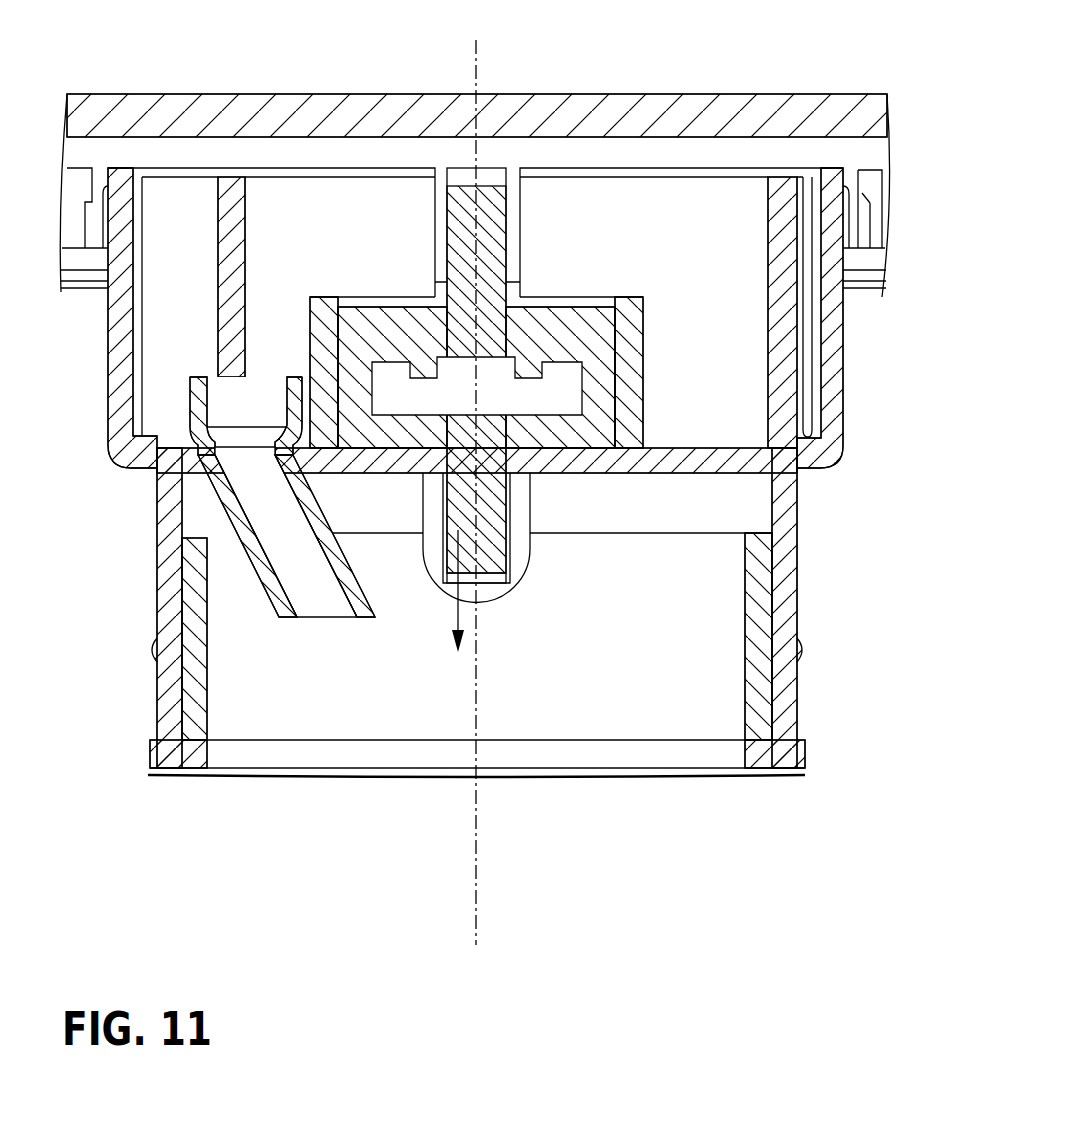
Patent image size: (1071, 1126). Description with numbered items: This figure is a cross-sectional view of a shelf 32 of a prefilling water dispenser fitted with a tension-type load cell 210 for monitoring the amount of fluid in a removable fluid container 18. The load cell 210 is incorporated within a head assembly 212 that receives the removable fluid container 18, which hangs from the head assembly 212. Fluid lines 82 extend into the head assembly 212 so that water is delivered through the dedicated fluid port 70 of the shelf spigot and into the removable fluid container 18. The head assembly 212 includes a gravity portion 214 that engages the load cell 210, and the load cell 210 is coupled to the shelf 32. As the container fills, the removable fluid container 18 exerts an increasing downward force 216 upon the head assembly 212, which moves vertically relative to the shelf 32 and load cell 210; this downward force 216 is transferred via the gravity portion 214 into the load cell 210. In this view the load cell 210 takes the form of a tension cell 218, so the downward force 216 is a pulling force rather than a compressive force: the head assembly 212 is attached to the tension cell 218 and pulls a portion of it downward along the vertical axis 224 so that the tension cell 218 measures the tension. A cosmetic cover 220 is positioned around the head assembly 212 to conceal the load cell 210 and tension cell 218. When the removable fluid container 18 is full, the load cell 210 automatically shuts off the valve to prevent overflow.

The shelf 32 is at (760, 95).
The load cell 210 is at (588, 270).
The head assembly 212 is at (783, 557).
The gravity portion 214 is at (518, 545).
The downward force 216 is at (457, 610).
The tension cell 218 is at (575, 347).
The cosmetic cover 220 is at (833, 376).
The vertical axis 224 is at (476, 805).
The dedicated fluid port 70 is at (287, 550).
The fluid lines 82 is at (198, 397).
The removable fluid container 18 is at (760, 713).